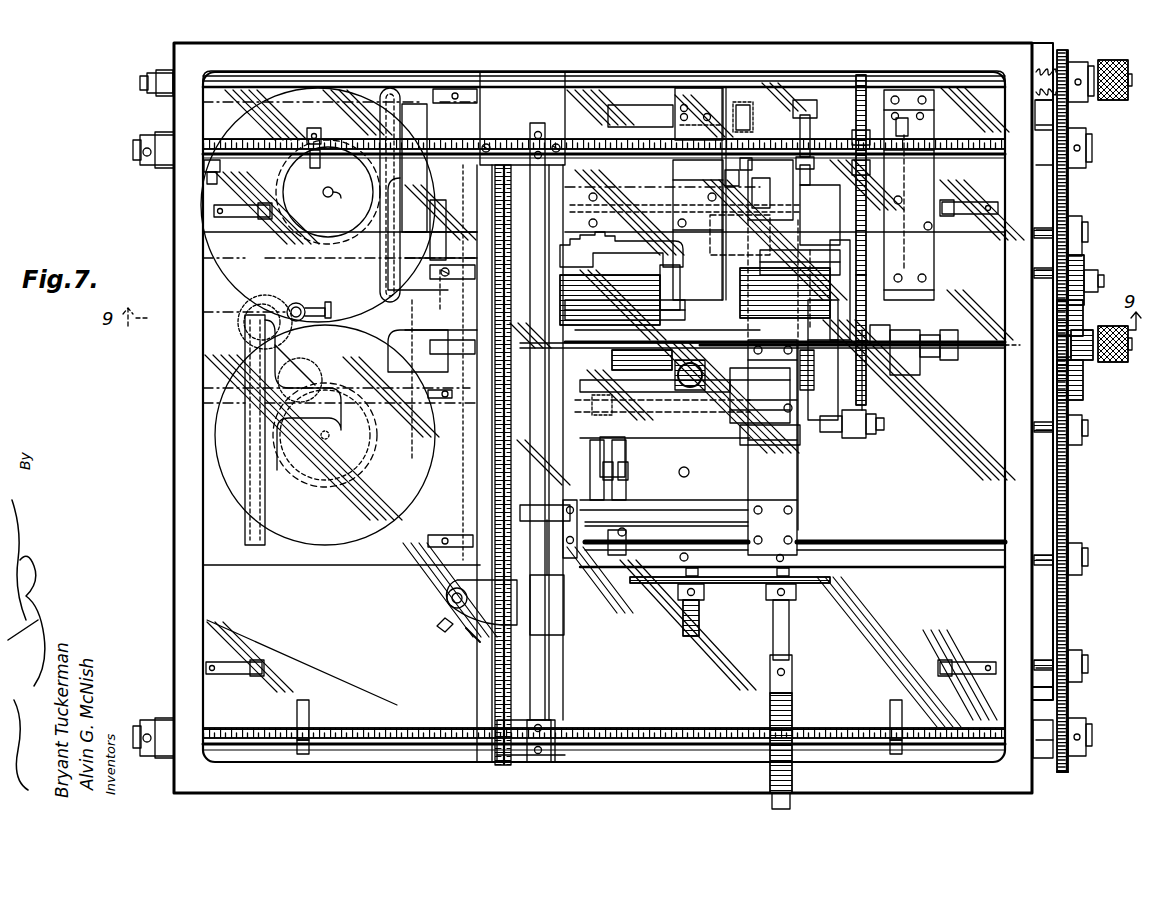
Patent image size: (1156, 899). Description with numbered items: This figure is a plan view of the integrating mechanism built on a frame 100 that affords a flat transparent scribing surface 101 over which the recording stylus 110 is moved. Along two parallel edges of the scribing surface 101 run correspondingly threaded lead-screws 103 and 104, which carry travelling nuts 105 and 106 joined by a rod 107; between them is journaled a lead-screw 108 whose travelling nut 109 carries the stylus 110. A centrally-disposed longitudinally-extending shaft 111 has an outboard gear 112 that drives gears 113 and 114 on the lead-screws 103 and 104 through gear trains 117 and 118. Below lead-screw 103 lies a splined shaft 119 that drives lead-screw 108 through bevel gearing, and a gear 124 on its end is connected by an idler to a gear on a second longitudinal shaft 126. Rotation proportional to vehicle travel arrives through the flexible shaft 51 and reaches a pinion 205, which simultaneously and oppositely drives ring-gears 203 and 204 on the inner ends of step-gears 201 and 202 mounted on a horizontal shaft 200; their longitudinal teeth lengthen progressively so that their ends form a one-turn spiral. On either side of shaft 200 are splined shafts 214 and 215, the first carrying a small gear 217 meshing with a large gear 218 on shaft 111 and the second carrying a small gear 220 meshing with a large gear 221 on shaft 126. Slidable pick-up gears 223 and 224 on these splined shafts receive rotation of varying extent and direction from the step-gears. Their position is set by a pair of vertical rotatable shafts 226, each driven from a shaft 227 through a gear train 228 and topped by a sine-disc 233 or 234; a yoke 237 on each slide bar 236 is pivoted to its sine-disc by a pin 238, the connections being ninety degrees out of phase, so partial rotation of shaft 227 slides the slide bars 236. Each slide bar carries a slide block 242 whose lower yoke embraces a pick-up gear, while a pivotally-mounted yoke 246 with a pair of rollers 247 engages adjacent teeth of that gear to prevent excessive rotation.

The flexible shaft 51 is at (792, 708).
The frame 100 is at (172, 491).
The scribing surface 101 is at (200, 565).
The lead-screw 103 is at (222, 144).
The lead-screw 104 is at (433, 729).
The travelling nut 105 is at (504, 128).
The travelling nut 106 is at (506, 738).
The rod 107 is at (542, 674).
The lead-screw 108 is at (518, 656).
The travelling nut 109 is at (462, 636).
The stylus 110 is at (448, 602).
The shaft 111 is at (963, 354).
The gear 112 is at (1088, 362).
The gear 113 is at (1088, 146).
The gear 114 is at (1066, 768).
The gear train 117 is at (1078, 211).
The gear train 118 is at (1068, 626).
The splined shaft 119 is at (264, 82).
The gear 124 is at (1070, 54).
The shaft 126 is at (973, 138).
The horizontal shaft 200 is at (857, 296).
The step-gear 201 is at (808, 430).
The step-gear 202 is at (648, 266).
The ring-gear 203 is at (718, 377).
The ring-gear 204 is at (672, 370).
The pinion 205 is at (662, 397).
The splined shaft 214 is at (814, 436).
The splined shaft 215 is at (664, 211).
The small gear 217 is at (872, 431).
The large gear 218 is at (876, 394).
The small gear 220 is at (862, 234).
The large gear 221 is at (844, 134).
The slidable gear 223 is at (626, 454).
The slidable gear 224 is at (776, 170).
The vertical rotatable shaft 226 is at (352, 480).
The shaft 227 is at (306, 298).
The gear train 228 is at (312, 278).
The sine-disc 233 is at (357, 541).
The sine-disc 234 is at (364, 308).
The slide bar 236 is at (484, 171).
The yoke 237 is at (375, 250).
The pin 238 is at (358, 78).
The slide block 242 is at (754, 150).
The pivotally-mounted yoke 246 is at (718, 174).
The roller 247 is at (617, 490).